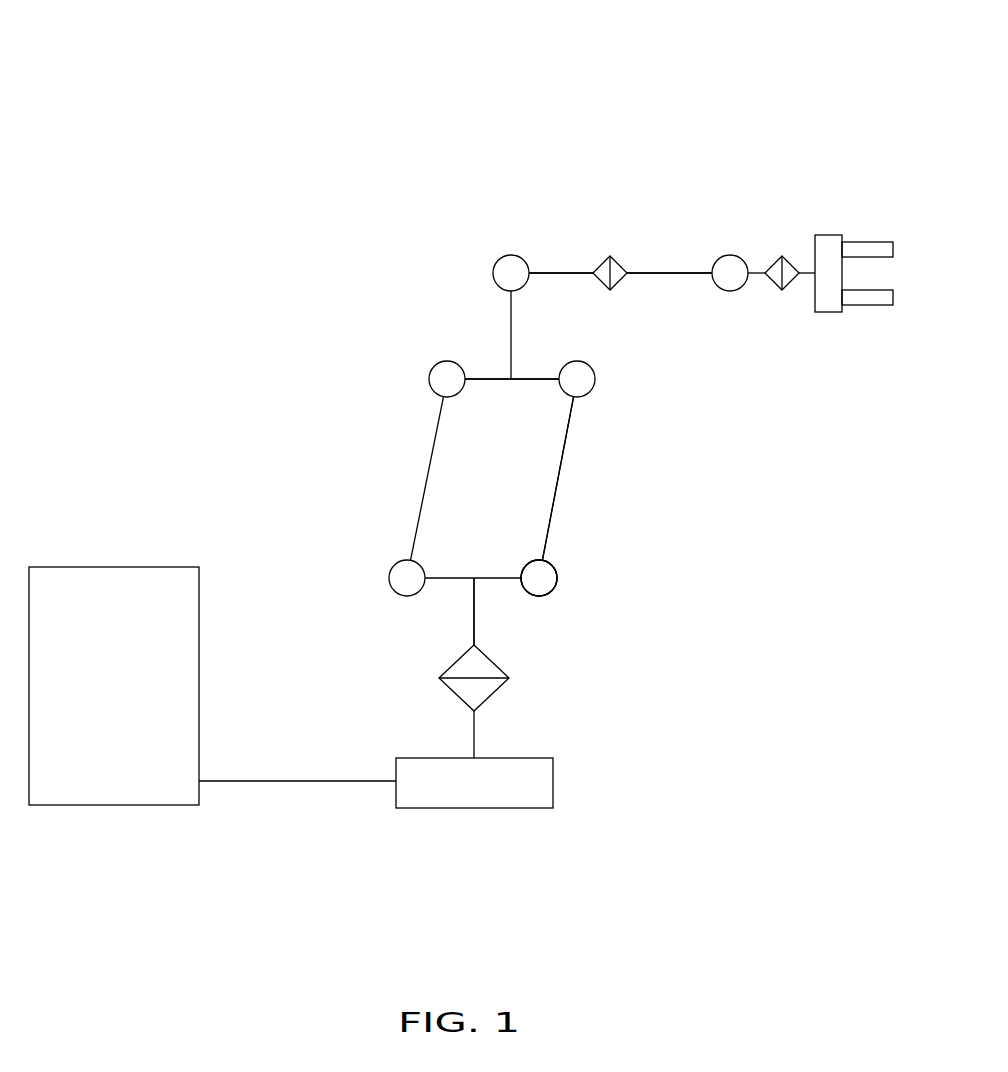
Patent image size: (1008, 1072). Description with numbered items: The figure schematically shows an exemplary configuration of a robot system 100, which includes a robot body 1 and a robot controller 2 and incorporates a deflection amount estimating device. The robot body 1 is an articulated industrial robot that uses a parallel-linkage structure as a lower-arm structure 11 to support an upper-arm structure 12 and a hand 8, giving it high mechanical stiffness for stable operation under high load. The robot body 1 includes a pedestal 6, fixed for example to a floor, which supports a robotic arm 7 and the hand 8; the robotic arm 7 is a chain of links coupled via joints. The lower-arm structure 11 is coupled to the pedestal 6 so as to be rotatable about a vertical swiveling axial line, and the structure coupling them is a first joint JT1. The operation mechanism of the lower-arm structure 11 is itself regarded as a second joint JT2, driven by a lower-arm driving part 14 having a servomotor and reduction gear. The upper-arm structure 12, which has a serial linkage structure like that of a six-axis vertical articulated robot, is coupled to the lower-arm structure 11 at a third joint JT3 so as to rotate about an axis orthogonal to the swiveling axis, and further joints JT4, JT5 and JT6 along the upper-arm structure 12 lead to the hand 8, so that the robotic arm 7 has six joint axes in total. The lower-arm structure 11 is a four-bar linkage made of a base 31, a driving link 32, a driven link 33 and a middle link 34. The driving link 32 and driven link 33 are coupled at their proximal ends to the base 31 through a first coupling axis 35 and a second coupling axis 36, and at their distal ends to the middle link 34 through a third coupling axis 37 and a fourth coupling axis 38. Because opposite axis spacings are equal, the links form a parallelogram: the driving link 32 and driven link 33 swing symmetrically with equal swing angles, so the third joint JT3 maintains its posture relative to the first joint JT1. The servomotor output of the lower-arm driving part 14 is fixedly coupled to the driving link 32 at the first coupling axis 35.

The robot system 100 is at (163, 143).
The robot body 1 is at (438, 217).
The robot controller 2 is at (125, 555).
The pedestal 6 is at (474, 798).
The robotic arm 7 is at (660, 273).
The hand 8 is at (863, 243).
The lower-arm structure 11 is at (558, 497).
The upper-arm structure 12 is at (560, 273).
The lower-arm driving part 14 is at (624, 578).
The base 31 is at (475, 615).
The driving link 32 is at (570, 435).
The driven link 33 is at (428, 460).
The middle link 34 is at (533, 372).
The first coupling axis 35 is at (560, 573).
The second coupling axis 36 is at (410, 597).
The third coupling axis 37 is at (595, 378).
The fourth coupling axis 38 is at (428, 378).
The first joint JT1 is at (492, 698).
The second joint JT2 is at (575, 600).
The third joint JT3 is at (515, 255).
The joint JT4 is at (619, 262).
The joint JT5 is at (727, 255).
The joint JT6 is at (797, 262).